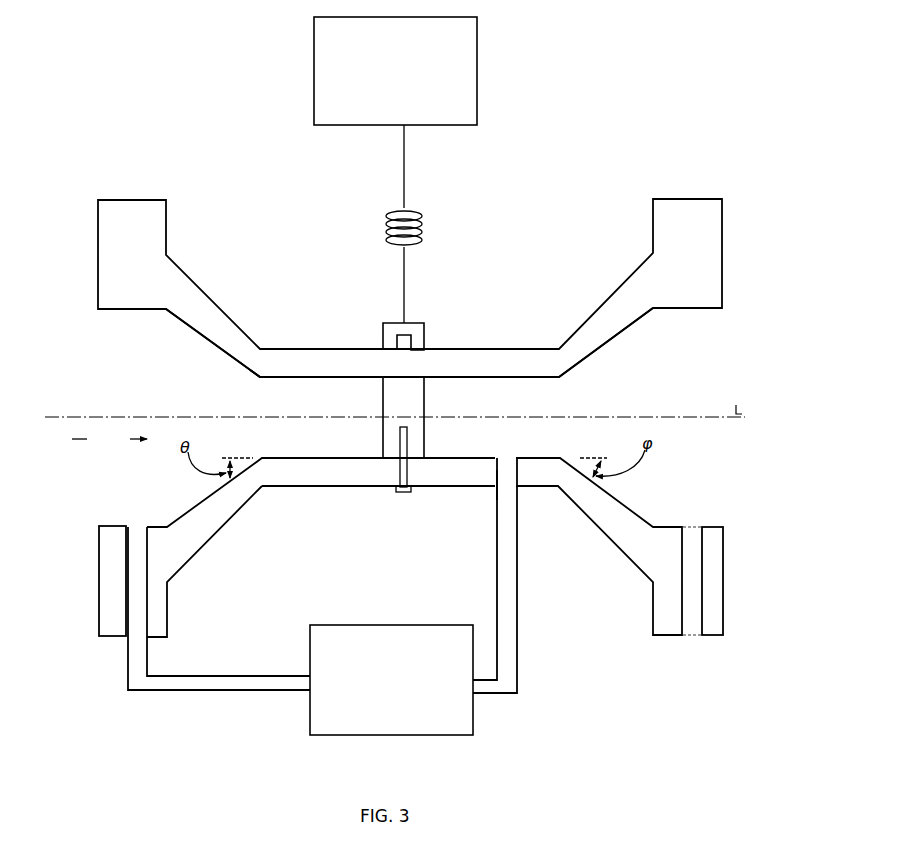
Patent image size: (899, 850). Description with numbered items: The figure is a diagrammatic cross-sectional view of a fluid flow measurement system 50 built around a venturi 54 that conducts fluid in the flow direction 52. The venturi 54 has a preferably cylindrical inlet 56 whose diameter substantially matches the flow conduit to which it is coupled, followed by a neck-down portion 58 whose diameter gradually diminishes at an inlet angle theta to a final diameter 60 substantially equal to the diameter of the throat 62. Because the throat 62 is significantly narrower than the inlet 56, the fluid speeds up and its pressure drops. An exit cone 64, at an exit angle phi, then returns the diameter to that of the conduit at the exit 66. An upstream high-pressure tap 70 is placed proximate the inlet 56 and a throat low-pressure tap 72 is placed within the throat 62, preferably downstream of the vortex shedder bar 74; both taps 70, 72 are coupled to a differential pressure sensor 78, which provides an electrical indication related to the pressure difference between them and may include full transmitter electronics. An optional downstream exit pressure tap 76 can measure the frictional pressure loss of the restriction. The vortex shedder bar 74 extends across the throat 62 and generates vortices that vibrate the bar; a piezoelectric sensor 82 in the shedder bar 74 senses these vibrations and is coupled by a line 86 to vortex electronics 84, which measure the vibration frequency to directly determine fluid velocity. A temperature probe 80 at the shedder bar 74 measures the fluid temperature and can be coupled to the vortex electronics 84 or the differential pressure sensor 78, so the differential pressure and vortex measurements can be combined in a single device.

The fluid flow measurement system 50 is at (136, 104).
The fluid flow direction 52 is at (109, 439).
The venturi 54 is at (96, 287).
The inlet 56 is at (117, 313).
The neck-down portion 58 is at (166, 313).
The final diameter 60 is at (259, 379).
The throat 62 is at (559, 379).
The exit cone 64 is at (592, 354).
The exit 66 is at (680, 310).
The upstream pressure tap 70 is at (129, 537).
The throat pressure tap 72 is at (498, 470).
The vortex shedder bar 74 is at (425, 440).
The downstream exit pressure tap 76 is at (683, 545).
The differential pressure sensor 78 is at (474, 718).
The temperature probe 80 is at (401, 493).
The piezoelectric sensor 82 is at (412, 345).
The vortex electronics 84 is at (478, 70).
The line 86 is at (404, 181).